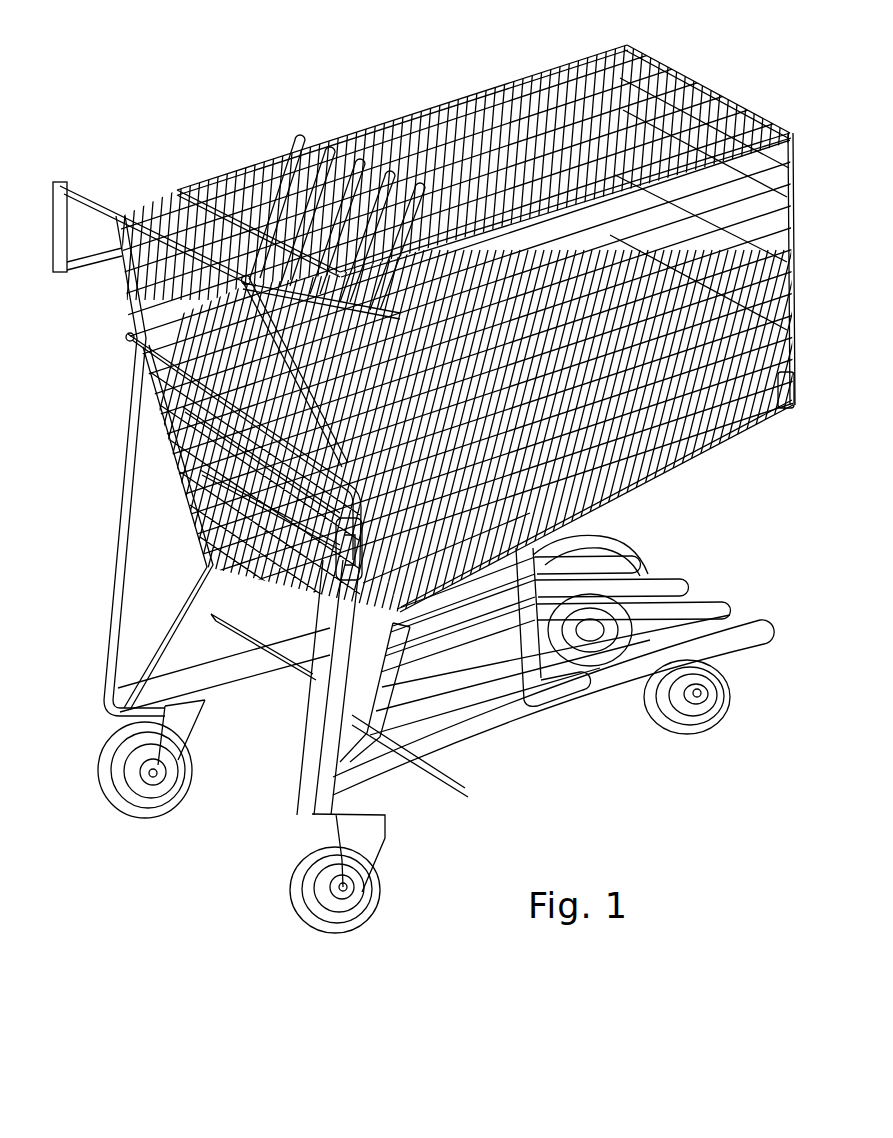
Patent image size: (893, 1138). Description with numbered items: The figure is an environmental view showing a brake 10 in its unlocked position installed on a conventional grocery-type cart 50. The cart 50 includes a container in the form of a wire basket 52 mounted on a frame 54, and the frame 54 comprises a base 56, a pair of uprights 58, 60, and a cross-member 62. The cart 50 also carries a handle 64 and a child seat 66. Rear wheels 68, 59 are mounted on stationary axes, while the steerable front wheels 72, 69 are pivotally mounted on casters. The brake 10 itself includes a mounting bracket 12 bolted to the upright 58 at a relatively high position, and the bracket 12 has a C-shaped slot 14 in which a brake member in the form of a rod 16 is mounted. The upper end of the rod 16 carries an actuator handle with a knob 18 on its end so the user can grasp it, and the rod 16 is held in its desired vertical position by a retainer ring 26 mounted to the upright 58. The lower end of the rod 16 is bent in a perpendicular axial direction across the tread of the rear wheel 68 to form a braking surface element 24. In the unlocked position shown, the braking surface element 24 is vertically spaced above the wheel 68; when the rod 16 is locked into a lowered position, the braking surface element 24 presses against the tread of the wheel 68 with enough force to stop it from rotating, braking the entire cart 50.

The brake 10 is at (258, 607).
The mounting bracket 12 is at (150, 395).
The C-shaped slot 14 is at (322, 575).
The rod 16 is at (452, 782).
The knob 18 is at (213, 500).
The braking surface element 24 is at (318, 835).
The retainer ring 26 is at (410, 795).
The grocery-type cart 50 is at (372, 95).
The wire basket 52 is at (676, 75).
The frame 54 is at (712, 573).
The base 56 is at (557, 712).
The upright 58 is at (303, 765).
The rear wheel 59 is at (112, 762).
The upright 60 is at (108, 655).
The cross-member 62 is at (128, 337).
The handle 64 is at (80, 186).
The child seat 66 is at (262, 170).
The rear wheel 68 is at (293, 885).
The front wheel 69 is at (660, 567).
The front wheel 72 is at (705, 712).